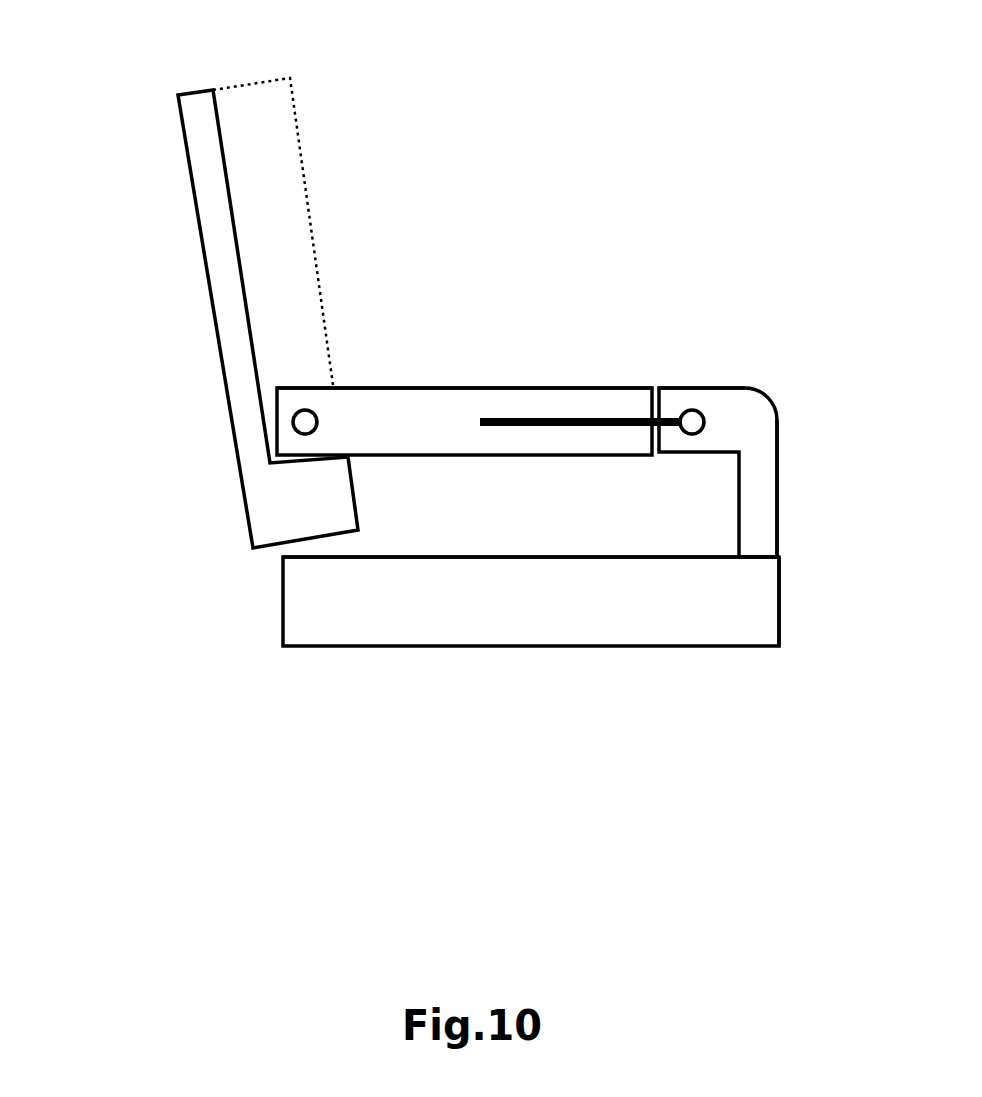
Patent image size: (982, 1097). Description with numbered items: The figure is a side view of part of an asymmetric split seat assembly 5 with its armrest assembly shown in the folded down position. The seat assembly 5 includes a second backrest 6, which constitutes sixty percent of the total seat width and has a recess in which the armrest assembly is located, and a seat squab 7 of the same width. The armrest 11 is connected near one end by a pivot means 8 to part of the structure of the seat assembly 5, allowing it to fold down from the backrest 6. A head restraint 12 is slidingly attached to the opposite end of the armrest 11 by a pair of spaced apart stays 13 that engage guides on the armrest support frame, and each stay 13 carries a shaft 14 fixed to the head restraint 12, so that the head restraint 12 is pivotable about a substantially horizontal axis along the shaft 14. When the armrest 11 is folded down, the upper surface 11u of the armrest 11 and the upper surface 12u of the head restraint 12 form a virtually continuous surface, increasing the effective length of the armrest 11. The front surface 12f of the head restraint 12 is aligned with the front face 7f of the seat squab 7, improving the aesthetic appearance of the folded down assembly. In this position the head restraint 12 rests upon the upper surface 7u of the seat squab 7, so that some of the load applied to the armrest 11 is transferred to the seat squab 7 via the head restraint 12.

The seat assembly 5 is at (686, 130).
The second backrest 6 is at (190, 170).
The seat squab 7 is at (283, 596).
The upper surface 7u is at (458, 557).
The front face 7f is at (780, 618).
The pivot means 8 is at (293, 418).
The armrest 11 is at (422, 387).
The upper surface 11u is at (464, 326).
The head restraint 12 is at (773, 398).
The upper surface 12u is at (737, 386).
The front surface 12f is at (778, 478).
The stays 13 is at (545, 417).
The shaft 14 is at (692, 410).